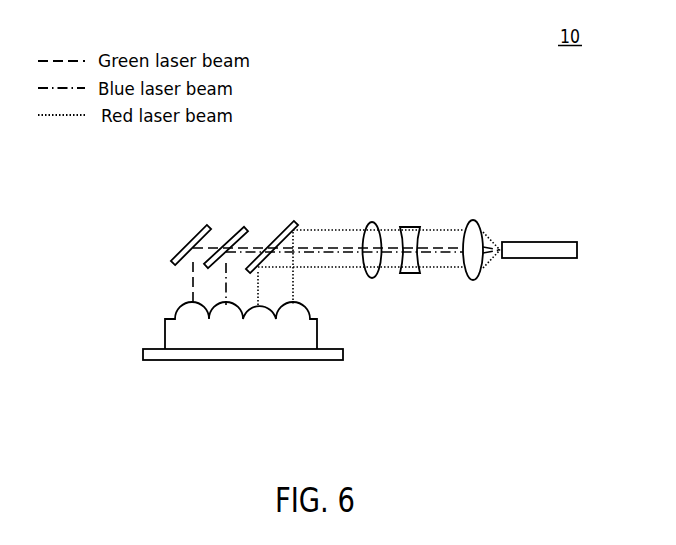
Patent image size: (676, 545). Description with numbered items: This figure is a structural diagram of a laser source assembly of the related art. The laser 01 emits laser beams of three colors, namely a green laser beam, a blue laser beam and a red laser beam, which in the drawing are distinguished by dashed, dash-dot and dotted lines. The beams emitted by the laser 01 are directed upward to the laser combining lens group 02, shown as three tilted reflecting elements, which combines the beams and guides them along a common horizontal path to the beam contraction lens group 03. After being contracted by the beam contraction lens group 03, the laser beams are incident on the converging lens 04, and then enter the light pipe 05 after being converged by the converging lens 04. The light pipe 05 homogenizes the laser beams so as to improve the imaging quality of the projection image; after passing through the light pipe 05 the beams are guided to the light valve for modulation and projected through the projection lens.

The laser 01 is at (242, 342).
The laser combining lens group 02 is at (274, 217).
The beam contraction lens group 03 is at (404, 215).
The converging lens 04 is at (475, 291).
The light pipe 05 is at (543, 267).